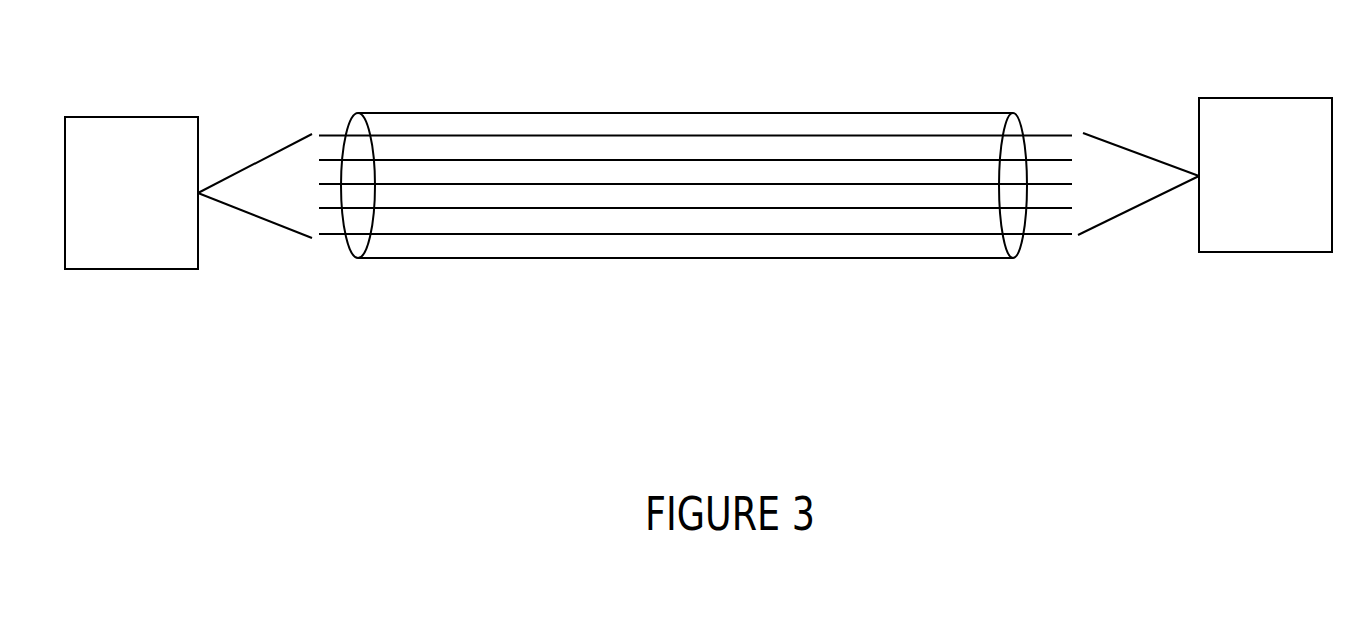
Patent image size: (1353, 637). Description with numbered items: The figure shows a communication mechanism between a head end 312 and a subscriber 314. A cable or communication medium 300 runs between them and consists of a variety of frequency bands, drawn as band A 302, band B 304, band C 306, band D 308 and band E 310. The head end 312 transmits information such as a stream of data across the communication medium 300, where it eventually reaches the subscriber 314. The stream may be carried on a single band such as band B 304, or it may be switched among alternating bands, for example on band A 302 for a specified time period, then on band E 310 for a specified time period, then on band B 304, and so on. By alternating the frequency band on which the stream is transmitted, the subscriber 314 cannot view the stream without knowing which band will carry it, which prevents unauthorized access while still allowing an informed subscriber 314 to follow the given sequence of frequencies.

The communication medium 300 is at (728, 112).
The band A 302 is at (1068, 135).
The band B 304 is at (1070, 160).
The band C 306 is at (1072, 184).
The band D 308 is at (1074, 211).
The band E 310 is at (1078, 235).
The head end 312 is at (124, 114).
The subscriber 314 is at (1260, 97).